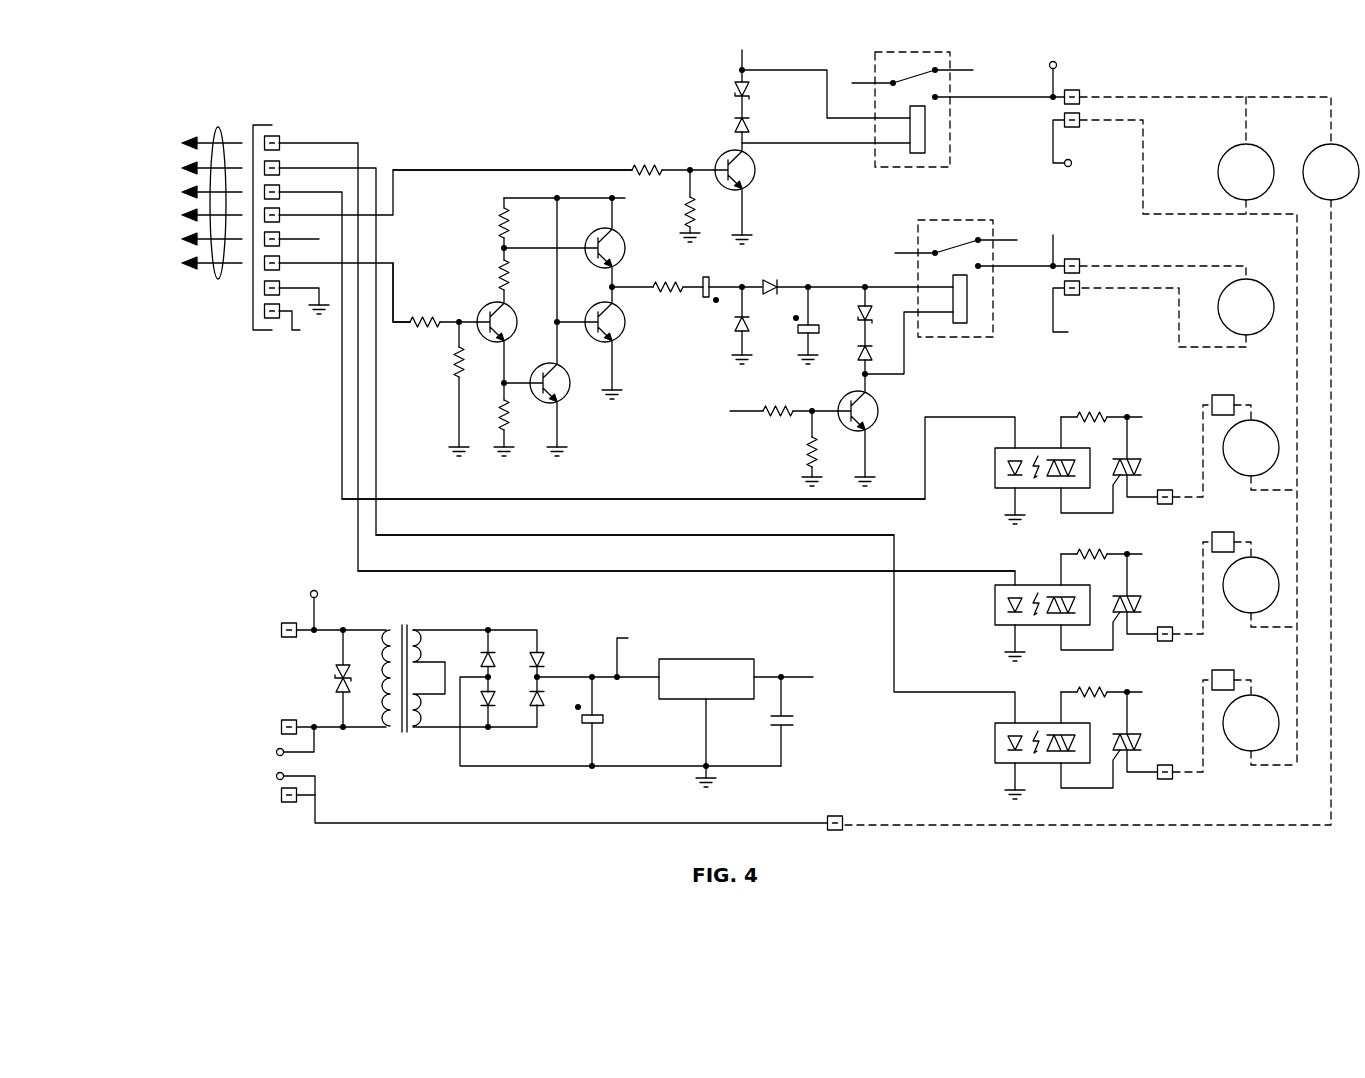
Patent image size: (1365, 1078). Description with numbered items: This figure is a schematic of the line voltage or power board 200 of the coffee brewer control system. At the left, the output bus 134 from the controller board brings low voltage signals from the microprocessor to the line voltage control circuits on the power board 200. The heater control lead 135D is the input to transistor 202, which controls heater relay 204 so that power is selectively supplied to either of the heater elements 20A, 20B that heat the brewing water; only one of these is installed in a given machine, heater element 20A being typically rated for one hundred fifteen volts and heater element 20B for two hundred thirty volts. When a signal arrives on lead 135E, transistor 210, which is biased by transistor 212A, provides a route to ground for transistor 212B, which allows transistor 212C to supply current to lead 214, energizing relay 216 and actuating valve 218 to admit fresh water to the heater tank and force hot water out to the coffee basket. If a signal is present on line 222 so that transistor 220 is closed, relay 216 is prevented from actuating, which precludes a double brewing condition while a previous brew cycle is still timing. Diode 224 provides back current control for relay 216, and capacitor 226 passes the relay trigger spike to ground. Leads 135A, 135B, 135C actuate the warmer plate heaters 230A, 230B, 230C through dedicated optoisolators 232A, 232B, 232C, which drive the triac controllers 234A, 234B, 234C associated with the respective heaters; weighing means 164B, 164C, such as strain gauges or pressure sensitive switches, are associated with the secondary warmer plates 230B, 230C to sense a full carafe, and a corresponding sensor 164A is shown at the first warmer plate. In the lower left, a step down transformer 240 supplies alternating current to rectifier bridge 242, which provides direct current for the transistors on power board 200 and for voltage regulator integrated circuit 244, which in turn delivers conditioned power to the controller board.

The power board 200 is at (410, 136).
The output bus 134 is at (218, 280).
The lead 135A is at (692, 498).
The lead 135B is at (692, 570).
The lead 135C is at (692, 534).
The heater control lead 135D is at (552, 168).
The lead 135E is at (398, 298).
The transistor 202 is at (757, 184).
The heater relay 204 is at (905, 163).
The transistor 210 is at (483, 320).
The transistor 212A is at (566, 402).
The transistor 212B is at (624, 318).
The transistor 212C is at (624, 246).
The lead 214 is at (838, 283).
The relay 216 is at (922, 230).
The valve 218 is at (1270, 281).
The transistor 220 is at (878, 421).
The line 222 is at (751, 414).
The diode 224 is at (738, 340).
The capacitor 226 is at (805, 340).
The heater element 20A is at (1219, 178).
The heater element 20B is at (1308, 152).
The fuse 164A is at (1212, 405).
The weighing means 164B is at (1212, 542).
The weighing means 164C is at (1212, 680).
The warmer plate heater 230A is at (1233, 467).
The warmer plate heater 230B is at (1233, 604).
The warmer plate heater 230C is at (1233, 742).
The optoisolator 232A is at (997, 451).
The optoisolator 232B is at (997, 588).
The optoisolator 232C is at (997, 726).
The triac controller 234A is at (1165, 459).
The triac controller 234B is at (1165, 596).
The triac controller 234C is at (1165, 734).
The step down transformer 240 is at (401, 627).
The rectifier bridge 242 is at (512, 642).
The voltage regulator integrated circuit 244 is at (710, 659).